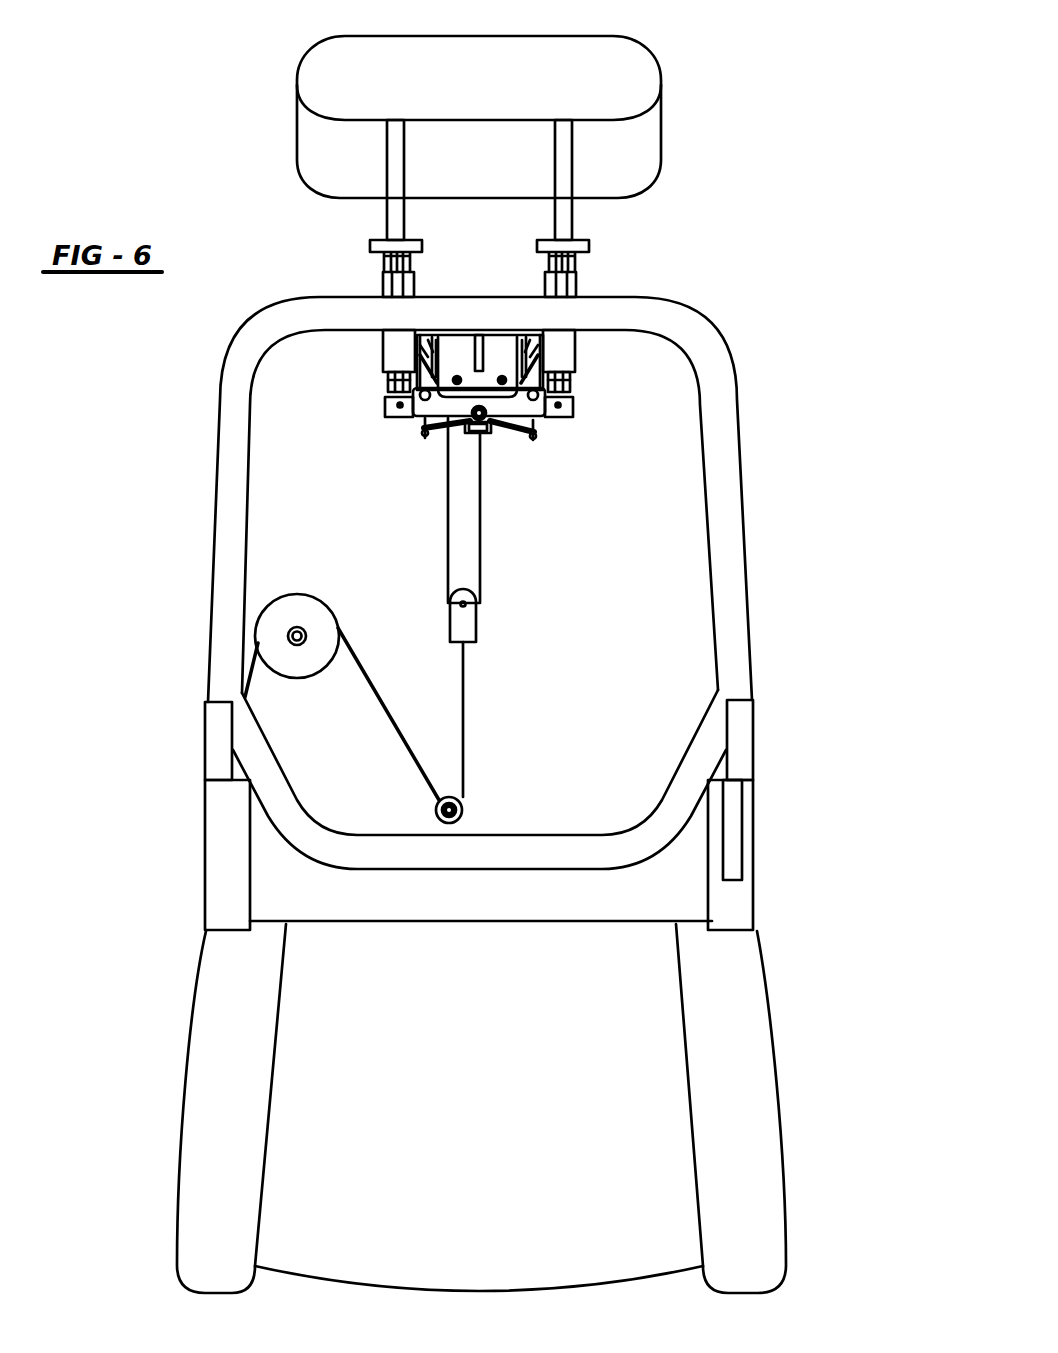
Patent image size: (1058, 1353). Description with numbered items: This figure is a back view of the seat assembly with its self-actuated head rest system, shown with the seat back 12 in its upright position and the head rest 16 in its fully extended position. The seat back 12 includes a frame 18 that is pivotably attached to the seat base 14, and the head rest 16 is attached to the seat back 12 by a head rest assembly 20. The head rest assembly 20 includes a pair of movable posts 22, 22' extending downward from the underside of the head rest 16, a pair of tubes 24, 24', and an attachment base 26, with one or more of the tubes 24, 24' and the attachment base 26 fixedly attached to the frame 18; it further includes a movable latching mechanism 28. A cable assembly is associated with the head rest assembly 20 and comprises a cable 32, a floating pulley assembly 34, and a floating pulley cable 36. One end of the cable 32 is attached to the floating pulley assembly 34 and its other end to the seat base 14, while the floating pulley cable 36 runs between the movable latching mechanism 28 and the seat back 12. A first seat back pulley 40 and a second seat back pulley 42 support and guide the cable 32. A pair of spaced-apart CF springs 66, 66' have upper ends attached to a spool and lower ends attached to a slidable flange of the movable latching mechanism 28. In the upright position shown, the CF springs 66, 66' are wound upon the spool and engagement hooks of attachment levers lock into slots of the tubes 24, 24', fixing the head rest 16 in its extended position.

The seat back 12 is at (662, 487).
The seat base 14 is at (232, 1046).
The head rest 16 is at (603, 72).
The frame 18 is at (710, 400).
The head rest assembly 20 is at (793, 189).
The movable post 22 is at (318, 180).
The movable post 22' is at (646, 180).
The tube 24 is at (344, 268).
The tube 24' is at (631, 267).
The attachment base 26 is at (398, 382).
The movable latching mechanism 28 is at (420, 407).
The cable 32 is at (365, 683).
The floating pulley assembly 34 is at (465, 623).
The floating pulley cable 36 is at (482, 539).
The first seat back pulley 40 is at (453, 798).
The second seat back pulley 42 is at (303, 605).
The CF spring 66 is at (363, 378).
The CF spring 66' is at (594, 377).